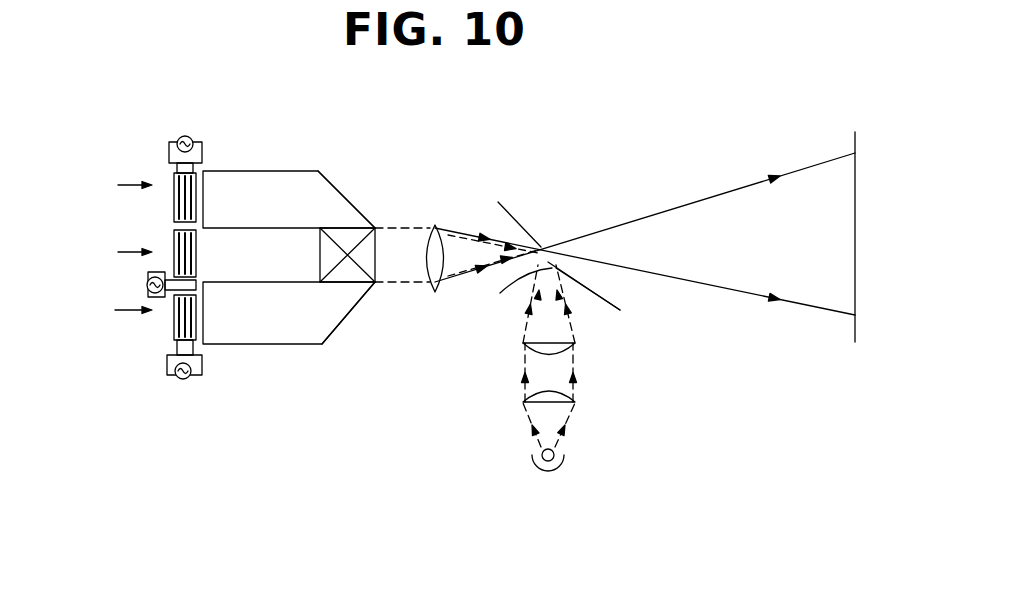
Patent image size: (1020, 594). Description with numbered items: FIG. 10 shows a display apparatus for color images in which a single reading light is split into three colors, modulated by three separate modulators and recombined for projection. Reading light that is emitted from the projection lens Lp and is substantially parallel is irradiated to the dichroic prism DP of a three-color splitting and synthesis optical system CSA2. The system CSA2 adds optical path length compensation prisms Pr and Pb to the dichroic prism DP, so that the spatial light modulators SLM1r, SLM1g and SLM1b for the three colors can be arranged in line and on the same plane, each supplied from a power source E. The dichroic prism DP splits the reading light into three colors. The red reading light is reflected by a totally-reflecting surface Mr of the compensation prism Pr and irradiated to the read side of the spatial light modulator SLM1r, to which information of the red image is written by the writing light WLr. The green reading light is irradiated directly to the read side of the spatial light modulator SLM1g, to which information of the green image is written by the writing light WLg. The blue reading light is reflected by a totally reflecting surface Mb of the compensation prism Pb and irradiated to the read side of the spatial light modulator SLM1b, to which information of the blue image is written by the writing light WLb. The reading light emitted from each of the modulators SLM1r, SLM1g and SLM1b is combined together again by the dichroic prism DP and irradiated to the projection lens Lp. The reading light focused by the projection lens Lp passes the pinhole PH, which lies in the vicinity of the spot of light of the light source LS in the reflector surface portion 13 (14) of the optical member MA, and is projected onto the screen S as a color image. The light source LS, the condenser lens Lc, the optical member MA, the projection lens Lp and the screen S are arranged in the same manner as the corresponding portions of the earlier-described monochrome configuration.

The power source E is at (186, 136).
The spatial light modulator SLM1r is at (173, 187).
The writing light WLr is at (101, 188).
The spatial light modulator SLM1g is at (173, 247).
The writing light WLg is at (101, 255).
The writing light WLb is at (98, 313).
The spatial light modulator SLM1b is at (173, 325).
The 3-color splitting and synthesis optical system CSA2 is at (307, 253).
The optical path length compensation prism Pr is at (230, 188).
The totally-reflecting surface Mr is at (350, 203).
The optical path length compensation prism Pb is at (247, 330).
The totally reflecting surface Mb is at (338, 332).
The dichroic prism DP is at (382, 282).
The projection lens Lp is at (450, 198).
The pinhole PH is at (546, 244).
The reflector surface portion 13 is at (500, 297).
The reflector surface portion 14 is at (500, 297).
The optical member MA is at (582, 291).
The screen S is at (857, 165).
The condenser lens Lc is at (586, 337).
The light source LS is at (557, 460).